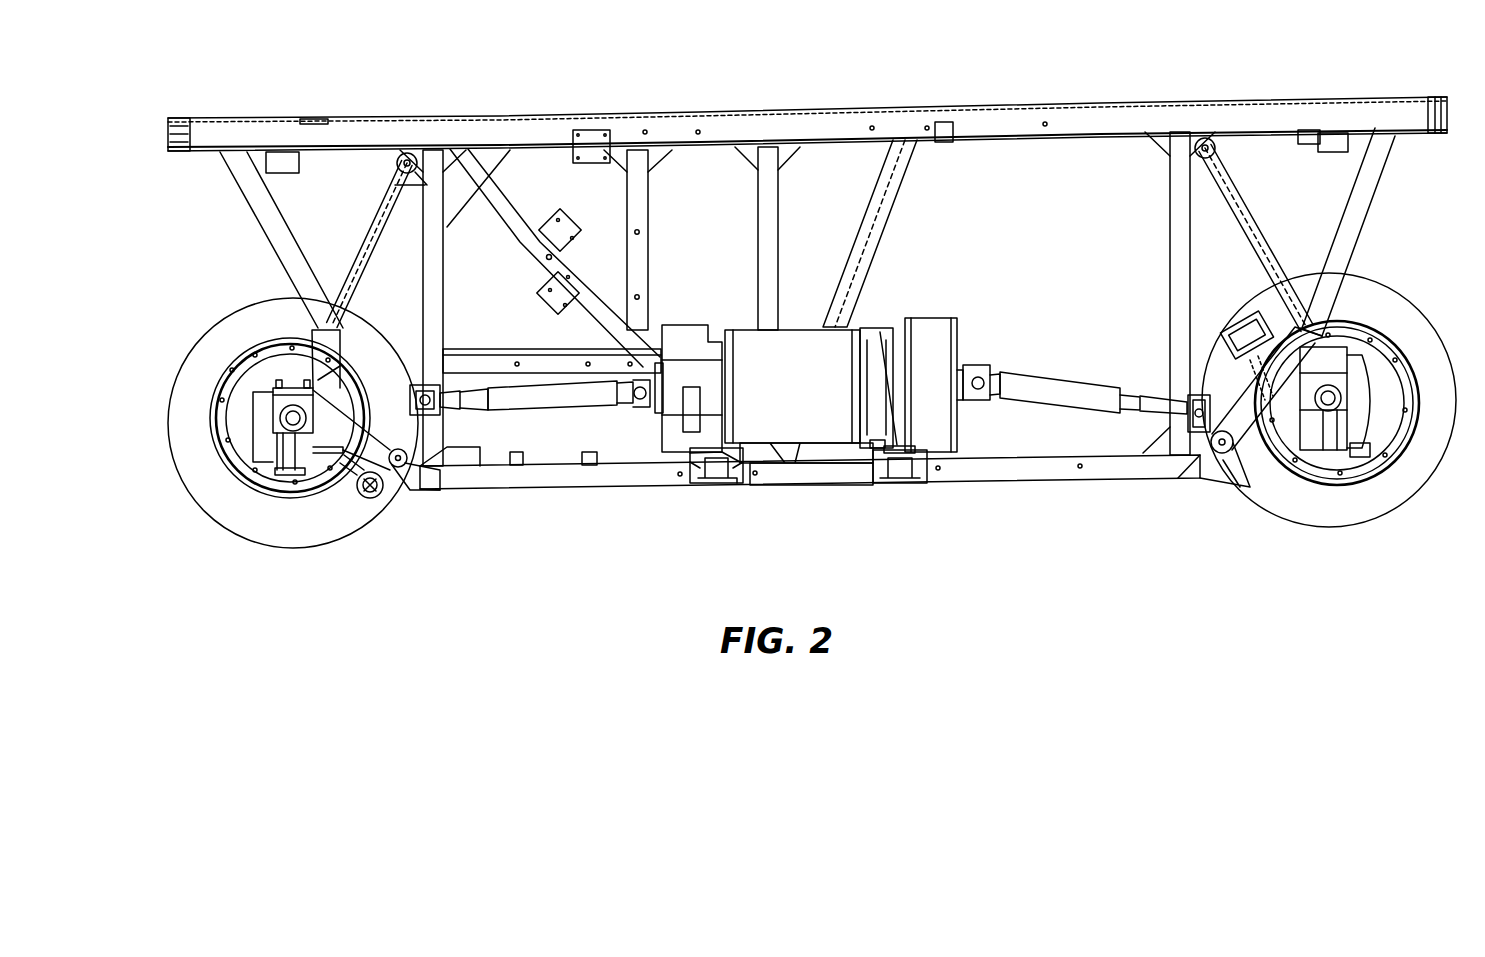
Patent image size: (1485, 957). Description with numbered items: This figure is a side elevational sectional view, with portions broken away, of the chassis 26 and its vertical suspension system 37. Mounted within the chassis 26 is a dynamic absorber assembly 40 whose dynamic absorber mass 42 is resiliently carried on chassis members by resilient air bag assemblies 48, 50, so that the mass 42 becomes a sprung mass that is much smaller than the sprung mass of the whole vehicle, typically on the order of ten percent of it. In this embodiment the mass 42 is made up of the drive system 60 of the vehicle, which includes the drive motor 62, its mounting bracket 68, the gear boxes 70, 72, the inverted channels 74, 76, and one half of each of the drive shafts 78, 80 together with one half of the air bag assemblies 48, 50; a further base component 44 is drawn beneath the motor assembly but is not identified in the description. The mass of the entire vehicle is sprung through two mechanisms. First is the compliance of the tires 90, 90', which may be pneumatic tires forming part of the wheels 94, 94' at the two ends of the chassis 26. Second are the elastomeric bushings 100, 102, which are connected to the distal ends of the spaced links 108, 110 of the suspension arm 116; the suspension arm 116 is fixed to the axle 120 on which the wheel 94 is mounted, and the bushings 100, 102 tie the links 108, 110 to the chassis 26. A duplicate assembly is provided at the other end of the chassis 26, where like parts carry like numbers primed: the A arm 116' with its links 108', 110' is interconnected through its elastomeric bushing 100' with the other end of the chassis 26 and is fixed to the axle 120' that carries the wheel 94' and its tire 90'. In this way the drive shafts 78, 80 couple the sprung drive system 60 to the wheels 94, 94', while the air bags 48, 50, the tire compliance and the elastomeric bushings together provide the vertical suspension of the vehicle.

The chassis 26 is at (887, 108).
The vertical suspension system 37 is at (291, 435).
The dynamic absorber assembly 40 is at (945, 265).
The dynamic absorber mass 42 is at (847, 347).
The motor base plate 44 is at (800, 487).
The resilient air bag assembly 48 is at (716, 490).
The resilient air bag assembly 50 is at (906, 490).
The drive system 60 is at (688, 256).
The drive motor 62 is at (803, 340).
The mounting bracket 68 is at (880, 418).
The gear box 70 is at (693, 325).
The gear box 72 is at (945, 345).
The inverted channel 74 is at (690, 455).
The inverted channel 76 is at (412, 388).
The drive shaft 78 is at (553, 385).
The drive shaft 80 is at (1086, 378).
The tire 90 is at (293, 446).
The tire 90' is at (1334, 403).
The wheel 94 is at (291, 418).
The wheel 94' is at (1334, 433).
The elastomeric bushing 100 is at (424, 127).
The elastomeric bushing 100' is at (1186, 106).
The elastomeric bushing 102 is at (403, 470).
The link 108 is at (361, 244).
The link 108' is at (1258, 238).
The link 110 is at (362, 378).
The link 110' is at (1267, 445).
The suspension arm 116 is at (281, 240).
The A arm 116' is at (1354, 232).
The axle 120 is at (296, 466).
The axle 120' is at (1319, 452).